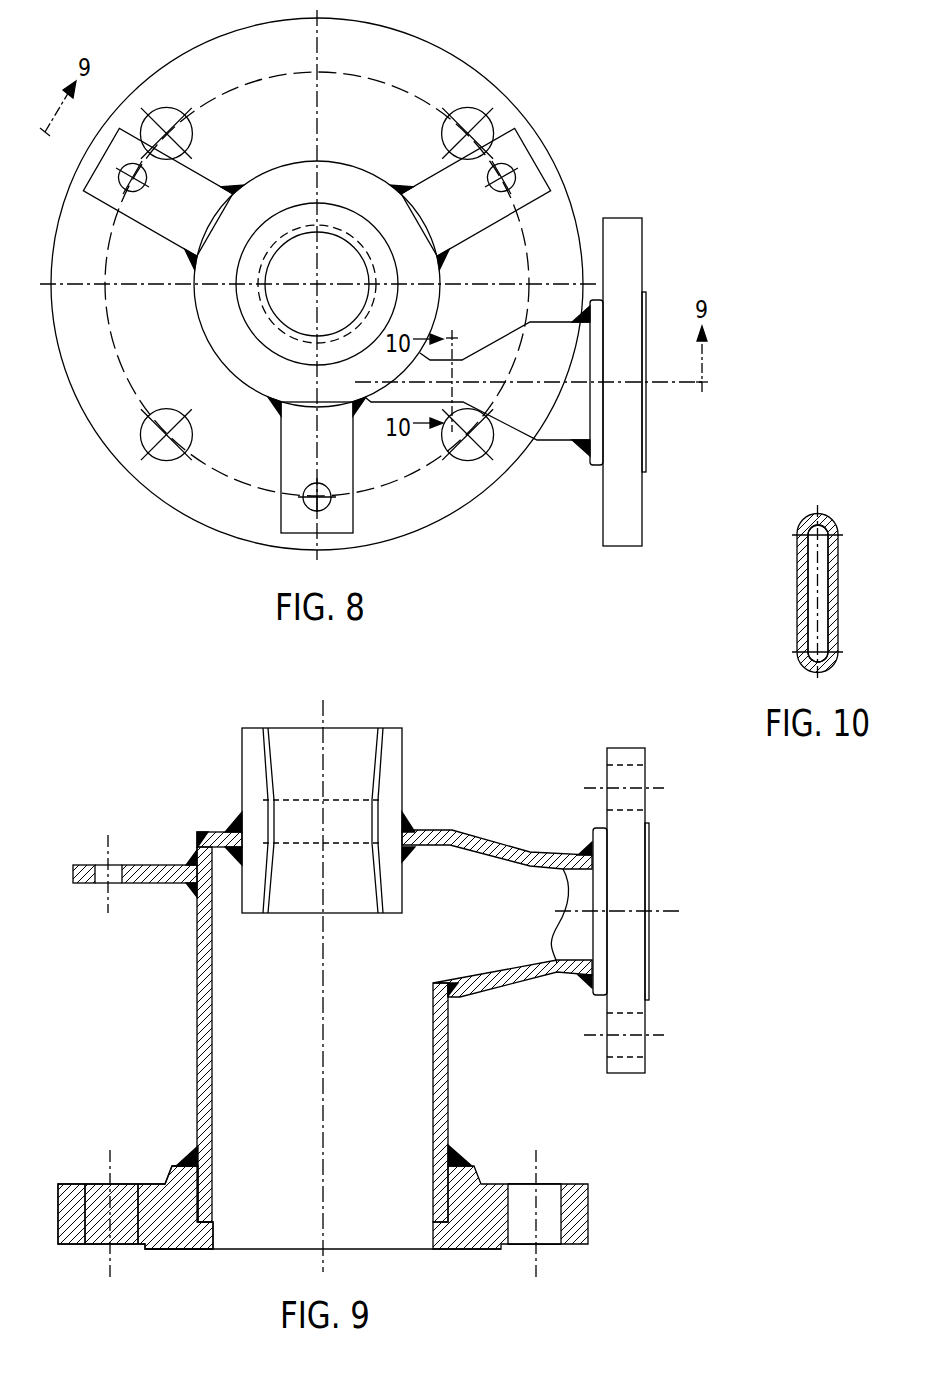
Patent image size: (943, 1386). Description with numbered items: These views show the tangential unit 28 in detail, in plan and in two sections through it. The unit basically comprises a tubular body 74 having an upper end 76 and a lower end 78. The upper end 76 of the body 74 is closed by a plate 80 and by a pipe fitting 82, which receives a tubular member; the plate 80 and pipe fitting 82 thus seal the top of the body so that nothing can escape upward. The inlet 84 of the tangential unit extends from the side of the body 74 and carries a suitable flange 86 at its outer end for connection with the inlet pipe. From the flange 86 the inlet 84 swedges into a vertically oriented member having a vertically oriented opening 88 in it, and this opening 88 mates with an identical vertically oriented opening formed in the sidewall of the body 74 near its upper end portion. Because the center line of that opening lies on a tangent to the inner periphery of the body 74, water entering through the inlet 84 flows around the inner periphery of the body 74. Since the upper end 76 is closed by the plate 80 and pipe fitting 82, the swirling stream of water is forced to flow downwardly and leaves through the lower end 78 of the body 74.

In FIG. 8, the tangential unit 28 is at (350, 155).
In FIG. 9, the tangential unit 28 is at (460, 1093).
In FIG. 9, the tubular body 74 is at (197, 1028).
In FIG. 9, the upper end 76 is at (205, 900).
In FIG. 9, the lower end 78 is at (188, 1160).
In FIG. 9, the plate 80 is at (220, 835).
In FIG. 9, the pipe fitting 82 is at (252, 770).
In FIG. 8, the inlet 84 is at (525, 405).
In FIG. 9, the inlet 84 is at (567, 852).
In FIG. 10, the inlet 84 is at (797, 556).
In FIG. 8, the flange 86 is at (624, 420).
In FIG. 9, the flange 86 is at (633, 972).
In FIG. 10, the vertically oriented opening 88 is at (820, 598).